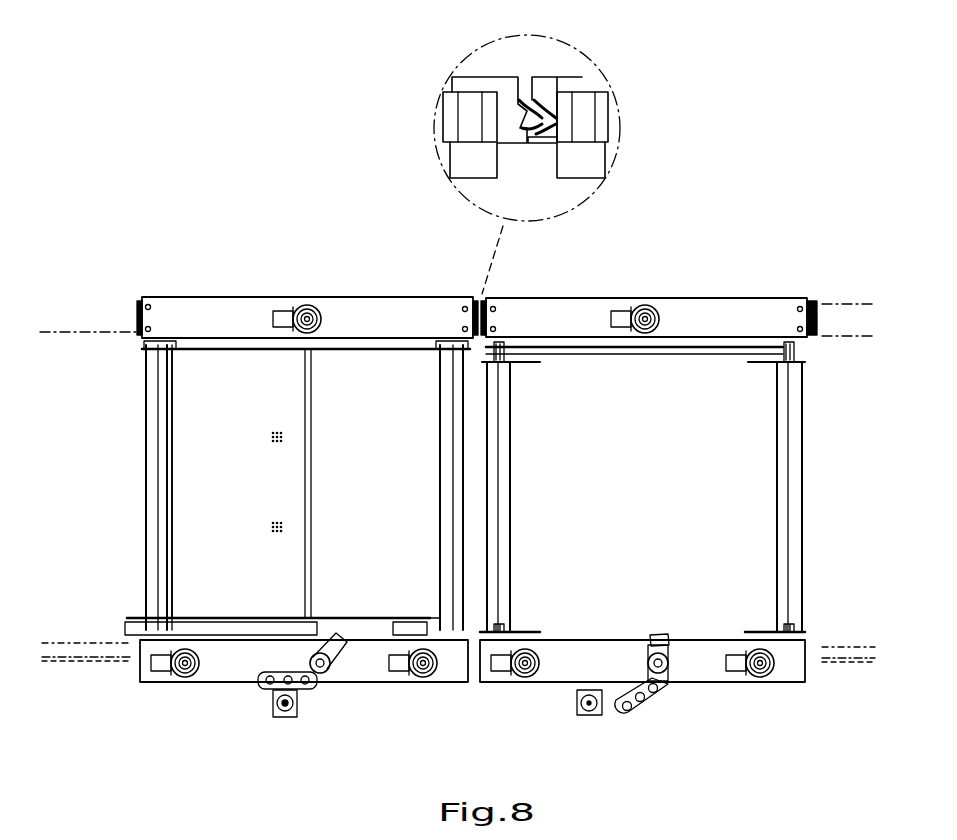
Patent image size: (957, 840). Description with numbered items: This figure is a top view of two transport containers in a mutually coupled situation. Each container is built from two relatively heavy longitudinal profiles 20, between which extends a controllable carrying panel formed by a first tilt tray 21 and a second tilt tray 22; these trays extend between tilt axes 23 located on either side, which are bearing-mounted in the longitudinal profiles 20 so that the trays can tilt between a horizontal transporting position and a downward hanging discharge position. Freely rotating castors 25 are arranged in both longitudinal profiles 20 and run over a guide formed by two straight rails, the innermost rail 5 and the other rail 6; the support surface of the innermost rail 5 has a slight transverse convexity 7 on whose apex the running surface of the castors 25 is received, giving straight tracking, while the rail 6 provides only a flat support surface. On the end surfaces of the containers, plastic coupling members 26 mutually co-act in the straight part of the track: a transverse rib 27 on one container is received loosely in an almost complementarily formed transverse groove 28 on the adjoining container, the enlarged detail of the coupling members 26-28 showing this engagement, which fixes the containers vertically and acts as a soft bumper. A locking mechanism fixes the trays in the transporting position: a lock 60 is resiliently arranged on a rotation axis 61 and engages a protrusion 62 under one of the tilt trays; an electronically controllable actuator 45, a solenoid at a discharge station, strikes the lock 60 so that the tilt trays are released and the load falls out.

The innermost rail 5 is at (54, 642).
The rail 6 is at (834, 326).
The convexity 7 is at (70, 657).
The longitudinal profile 20 is at (250, 312).
The first tilt tray 21 is at (360, 386).
The second tilt tray 22 is at (186, 512).
The tilt axis 23 is at (150, 545).
The castor 25 is at (320, 316).
The coupling member 26 is at (465, 114).
The transverse rib 27 is at (815, 300).
The transverse groove 28 is at (137, 305).
The coupling members with rib and groove 26-28 is at (482, 296).
The actuator 45 is at (290, 718).
The lock 60 is at (268, 690).
The rotation axis 61 is at (324, 686).
The protrusion 62 is at (660, 634).